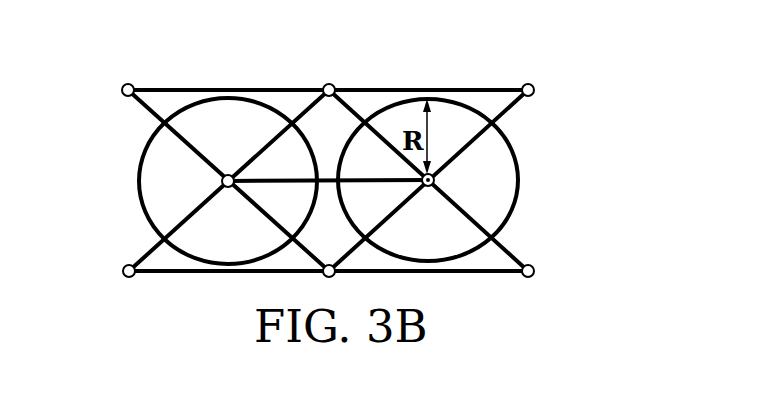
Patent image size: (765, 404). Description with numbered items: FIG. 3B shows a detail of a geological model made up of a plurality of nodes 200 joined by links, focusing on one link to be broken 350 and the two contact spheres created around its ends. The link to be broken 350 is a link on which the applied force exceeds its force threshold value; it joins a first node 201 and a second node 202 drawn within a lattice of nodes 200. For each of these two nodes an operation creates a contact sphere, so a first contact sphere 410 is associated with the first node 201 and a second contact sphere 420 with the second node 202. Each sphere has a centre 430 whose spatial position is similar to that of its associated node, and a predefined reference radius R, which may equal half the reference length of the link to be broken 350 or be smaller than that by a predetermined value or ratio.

The nodes 200 is at (522, 84).
The first node 201 is at (222, 184).
The second node 202 is at (434, 182).
The link to be broken 350 is at (377, 182).
The first contact sphere 410 is at (141, 160).
The second contact sphere 420 is at (514, 156).
The centre 430 is at (433, 177).